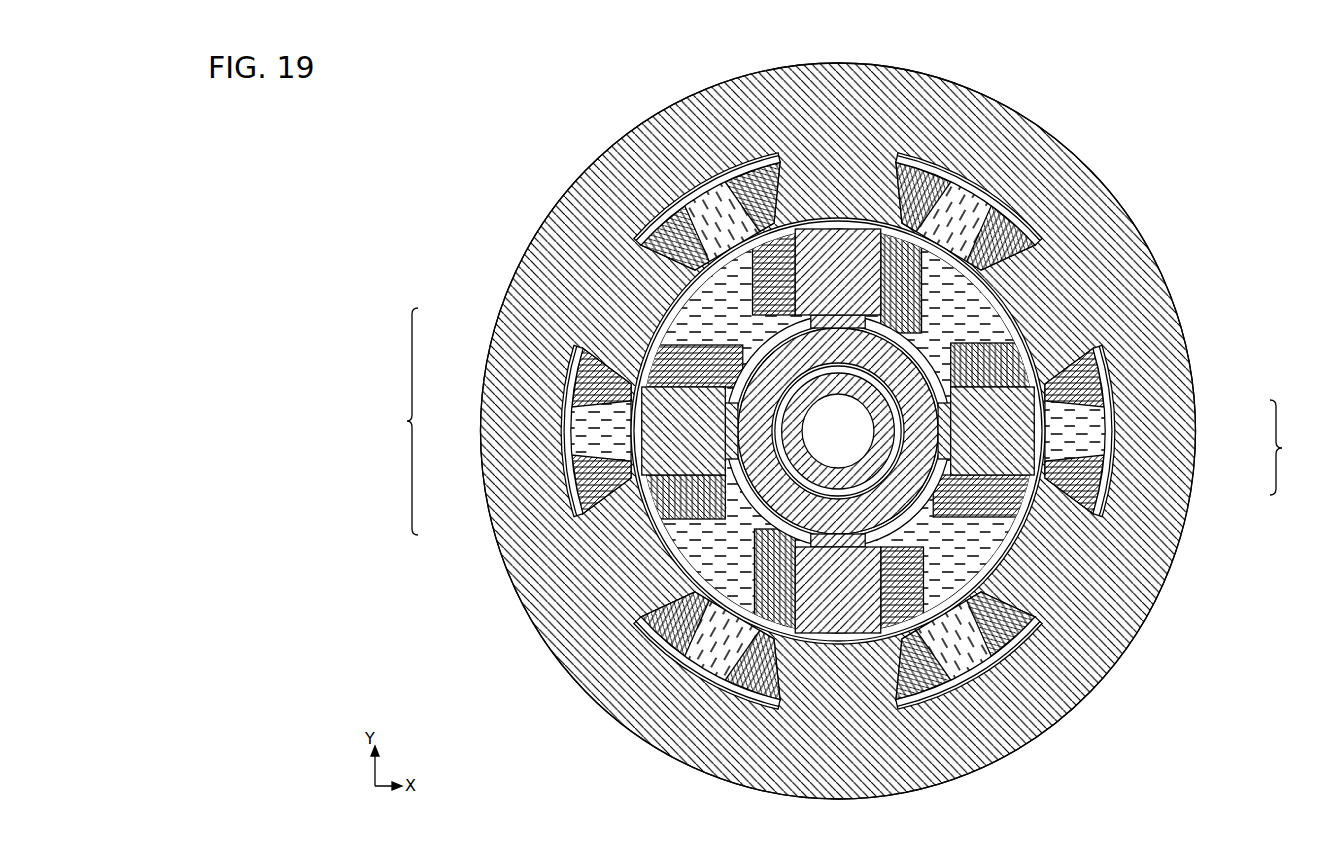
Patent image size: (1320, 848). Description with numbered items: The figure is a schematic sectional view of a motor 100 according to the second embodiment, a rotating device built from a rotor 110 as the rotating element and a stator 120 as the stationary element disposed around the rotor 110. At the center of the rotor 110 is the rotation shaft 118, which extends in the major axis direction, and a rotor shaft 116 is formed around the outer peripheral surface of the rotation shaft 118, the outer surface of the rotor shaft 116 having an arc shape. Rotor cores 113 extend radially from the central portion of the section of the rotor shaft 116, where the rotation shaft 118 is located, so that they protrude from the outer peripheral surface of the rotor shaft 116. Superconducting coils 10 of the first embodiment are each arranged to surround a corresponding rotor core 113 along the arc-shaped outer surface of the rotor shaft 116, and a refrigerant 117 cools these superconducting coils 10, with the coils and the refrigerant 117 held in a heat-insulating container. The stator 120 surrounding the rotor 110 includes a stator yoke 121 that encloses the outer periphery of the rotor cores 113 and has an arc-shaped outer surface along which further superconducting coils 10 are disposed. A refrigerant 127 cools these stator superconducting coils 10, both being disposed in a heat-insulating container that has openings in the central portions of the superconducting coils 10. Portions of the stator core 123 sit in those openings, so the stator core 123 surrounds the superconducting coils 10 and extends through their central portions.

The motor 100 is at (1160, 63).
The rotor 110 is at (709, 431).
The stator 120 is at (896, 431).
The superconducting coil 10 is at (662, 338).
The rotor core 113 is at (660, 444).
The rotor shaft 116 is at (670, 508).
The refrigerant 117 is at (697, 313).
The rotation shaft 118 is at (627, 402).
The stator yoke 121 is at (1048, 466).
The stator core 123 is at (1152, 454).
The refrigerant 127 is at (1085, 422).